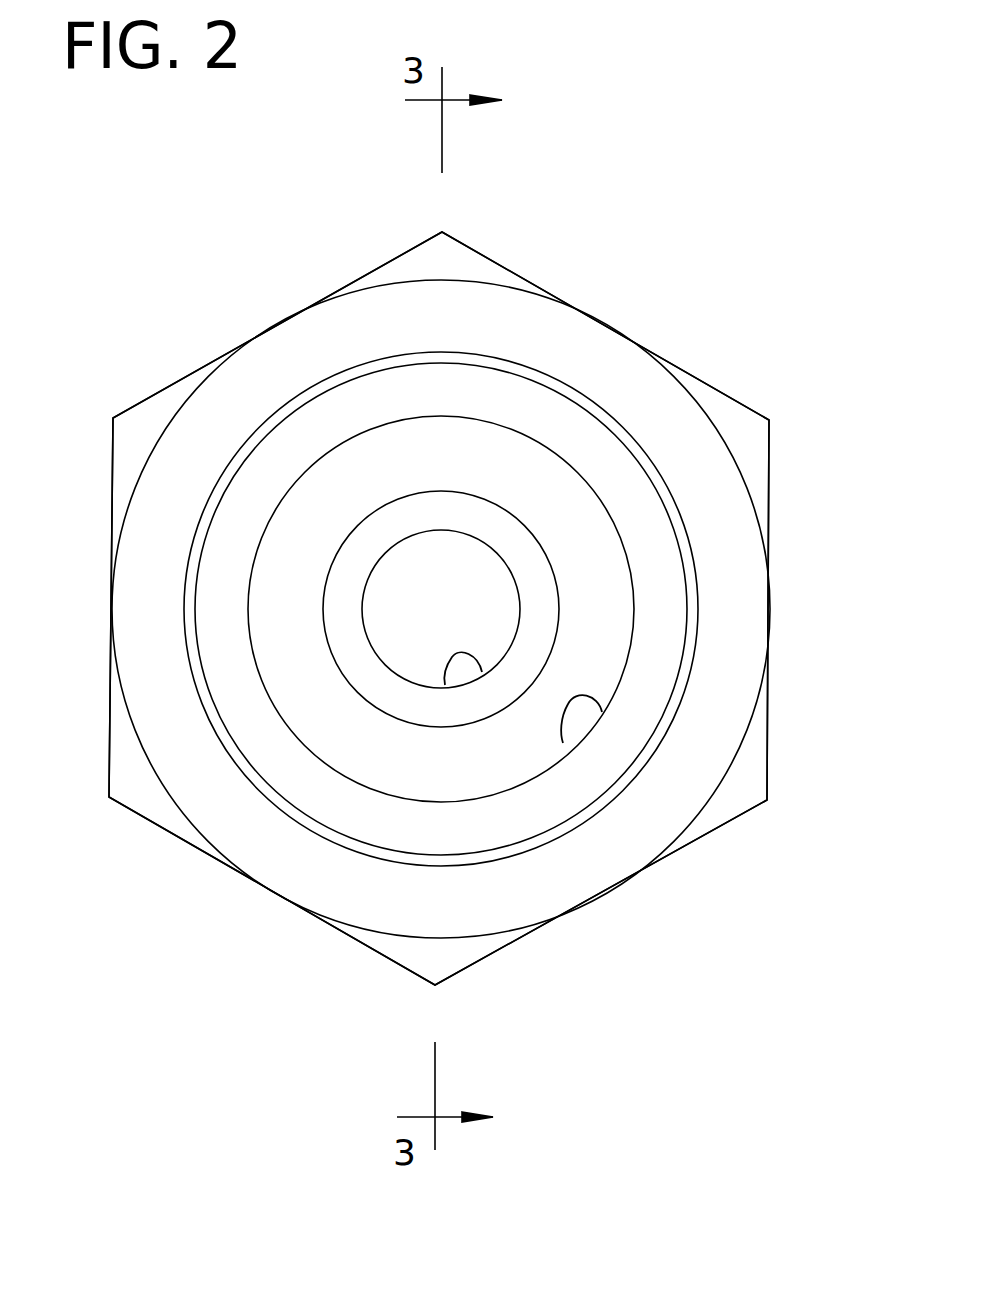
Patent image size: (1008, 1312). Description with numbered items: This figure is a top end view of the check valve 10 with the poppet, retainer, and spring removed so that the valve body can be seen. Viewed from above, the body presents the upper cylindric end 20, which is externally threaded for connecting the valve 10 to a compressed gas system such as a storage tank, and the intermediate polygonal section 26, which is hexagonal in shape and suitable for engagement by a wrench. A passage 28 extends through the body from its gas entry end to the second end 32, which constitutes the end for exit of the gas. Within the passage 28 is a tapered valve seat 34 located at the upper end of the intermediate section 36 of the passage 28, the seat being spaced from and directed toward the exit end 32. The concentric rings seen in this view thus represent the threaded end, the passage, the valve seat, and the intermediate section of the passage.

The check valve 10 is at (672, 238).
The upper cylindric end 20 is at (737, 472).
The intermediate polygonal section 26 is at (715, 388).
The passage 28 is at (563, 743).
The second end 32 is at (695, 588).
The tapered valve seat 34 is at (548, 647).
The intermediate section of the passage 36 is at (445, 685).